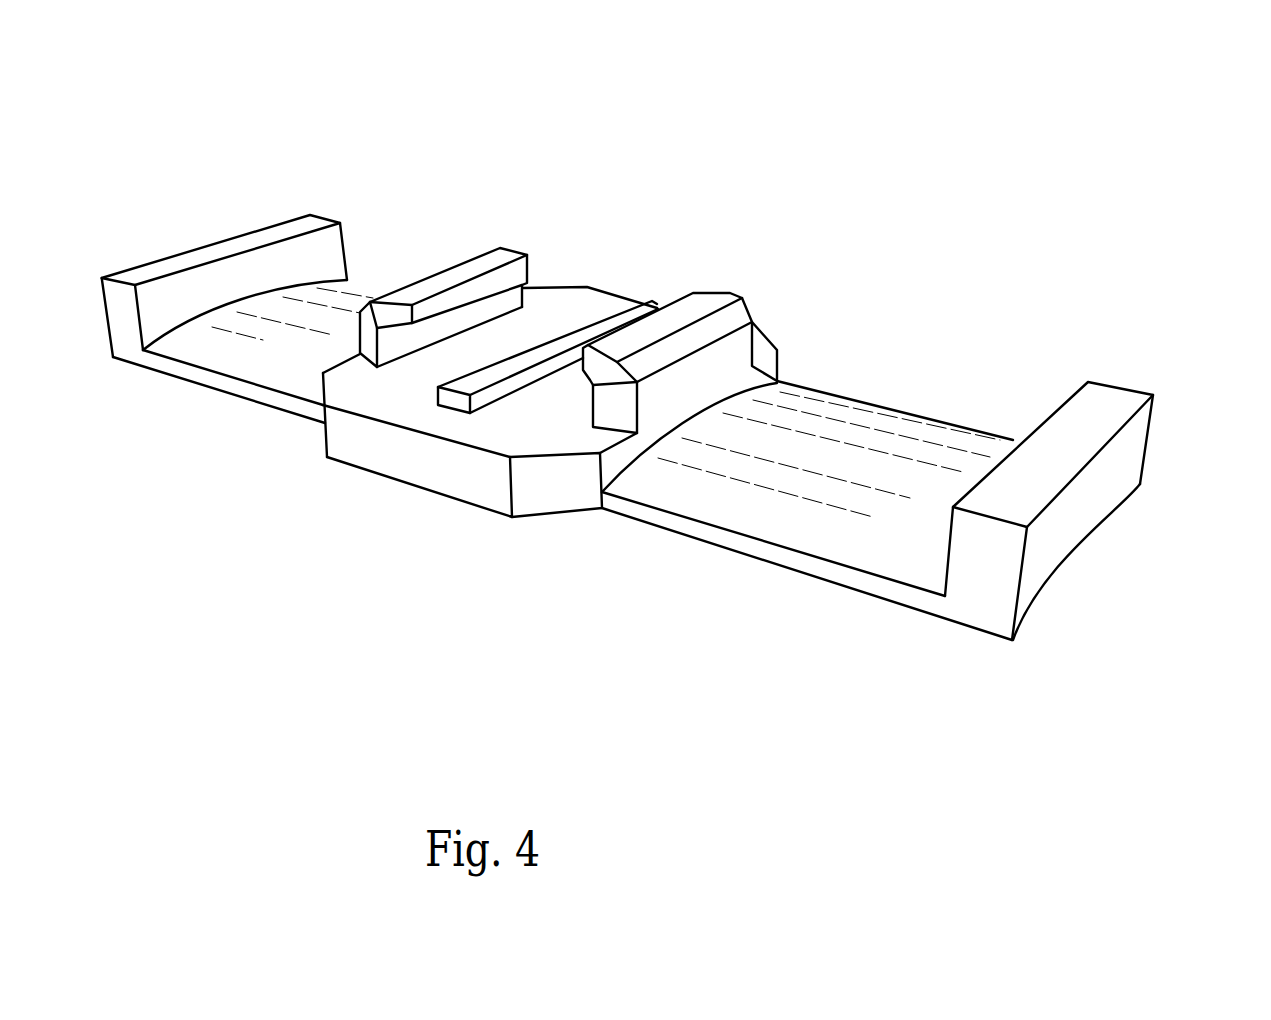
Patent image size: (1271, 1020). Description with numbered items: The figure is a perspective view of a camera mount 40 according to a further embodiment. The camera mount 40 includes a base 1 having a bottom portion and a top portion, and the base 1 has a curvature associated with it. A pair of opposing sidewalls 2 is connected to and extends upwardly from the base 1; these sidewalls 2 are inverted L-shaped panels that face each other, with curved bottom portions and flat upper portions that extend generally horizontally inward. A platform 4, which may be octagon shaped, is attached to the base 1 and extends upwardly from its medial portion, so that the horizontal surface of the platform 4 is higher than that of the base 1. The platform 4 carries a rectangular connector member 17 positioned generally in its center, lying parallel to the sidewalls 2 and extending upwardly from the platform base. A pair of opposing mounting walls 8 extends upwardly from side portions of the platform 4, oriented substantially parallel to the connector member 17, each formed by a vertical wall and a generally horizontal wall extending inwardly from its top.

The pair of opposing sidewalls 2 is at (278, 233).
The base 1 is at (357, 285).
The platform 4 is at (497, 446).
The connector member 17 is at (462, 383).
The pair of opposing mounting walls 8 is at (496, 252).
The camera mount 40 is at (968, 137).